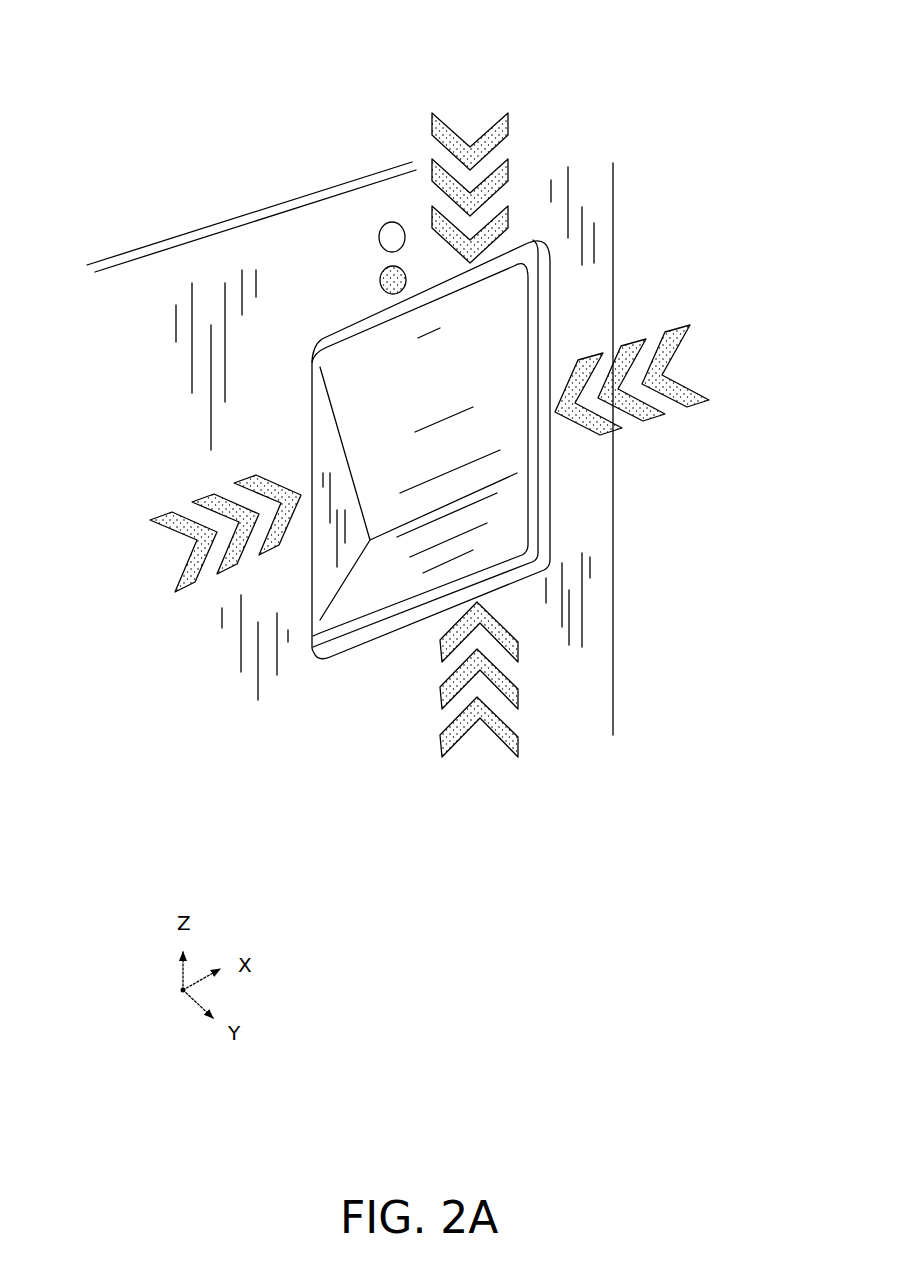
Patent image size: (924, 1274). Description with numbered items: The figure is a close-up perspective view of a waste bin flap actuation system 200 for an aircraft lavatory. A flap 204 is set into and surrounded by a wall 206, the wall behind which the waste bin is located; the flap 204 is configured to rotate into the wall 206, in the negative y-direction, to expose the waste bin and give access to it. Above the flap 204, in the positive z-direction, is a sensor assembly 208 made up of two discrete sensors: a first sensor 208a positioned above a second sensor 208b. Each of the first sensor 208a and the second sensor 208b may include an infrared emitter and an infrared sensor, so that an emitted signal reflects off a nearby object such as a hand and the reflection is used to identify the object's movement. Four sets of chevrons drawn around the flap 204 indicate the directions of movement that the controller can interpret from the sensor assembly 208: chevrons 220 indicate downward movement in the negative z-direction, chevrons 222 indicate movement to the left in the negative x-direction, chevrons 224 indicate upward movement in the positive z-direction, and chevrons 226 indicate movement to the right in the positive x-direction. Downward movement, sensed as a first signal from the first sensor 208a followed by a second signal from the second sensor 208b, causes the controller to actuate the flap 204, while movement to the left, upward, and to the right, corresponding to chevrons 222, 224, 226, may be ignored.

The waste bin flap actuation system 200 is at (72, 104).
The flap 204 is at (355, 600).
The wall 206 is at (210, 293).
The sensor assembly 208 is at (331, 164).
The first sensor 208a is at (391, 222).
The second sensor 208b is at (378, 278).
The chevrons 220 is at (508, 121).
The chevrons 222 is at (683, 392).
The chevrons 224 is at (512, 740).
The chevrons 226 is at (190, 584).